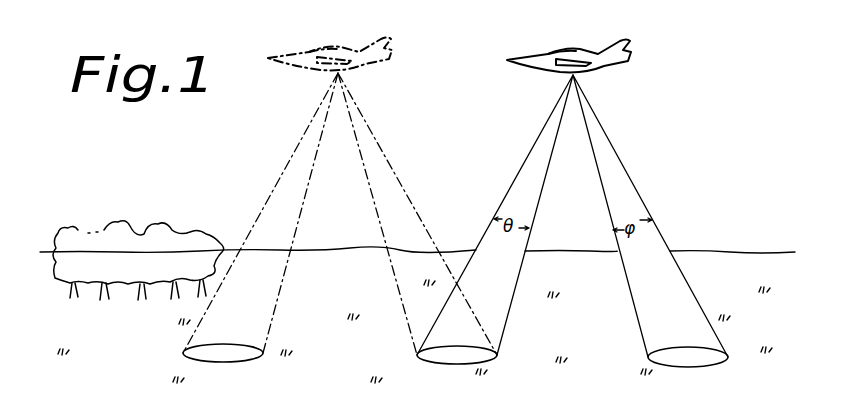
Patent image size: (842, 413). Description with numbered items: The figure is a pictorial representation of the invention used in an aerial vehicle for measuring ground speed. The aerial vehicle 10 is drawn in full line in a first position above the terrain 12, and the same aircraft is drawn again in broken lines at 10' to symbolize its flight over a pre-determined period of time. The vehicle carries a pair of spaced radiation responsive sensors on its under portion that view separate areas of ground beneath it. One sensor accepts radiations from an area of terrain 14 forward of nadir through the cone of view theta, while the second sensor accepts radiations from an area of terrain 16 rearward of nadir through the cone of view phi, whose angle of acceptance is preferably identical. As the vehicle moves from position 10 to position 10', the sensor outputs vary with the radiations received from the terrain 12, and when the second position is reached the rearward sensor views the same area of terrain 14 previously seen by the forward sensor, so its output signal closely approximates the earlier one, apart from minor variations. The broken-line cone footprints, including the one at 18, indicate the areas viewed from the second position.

The aerial vehicle 10 is at (569, 45).
The aerial vehicle in second position 10' is at (340, 43).
The terrain 12 is at (455, 249).
The area of terrain 14 is at (449, 361).
The area of terrain 16 is at (697, 361).
The illuminated ground area at earlier position 18 is at (232, 355).